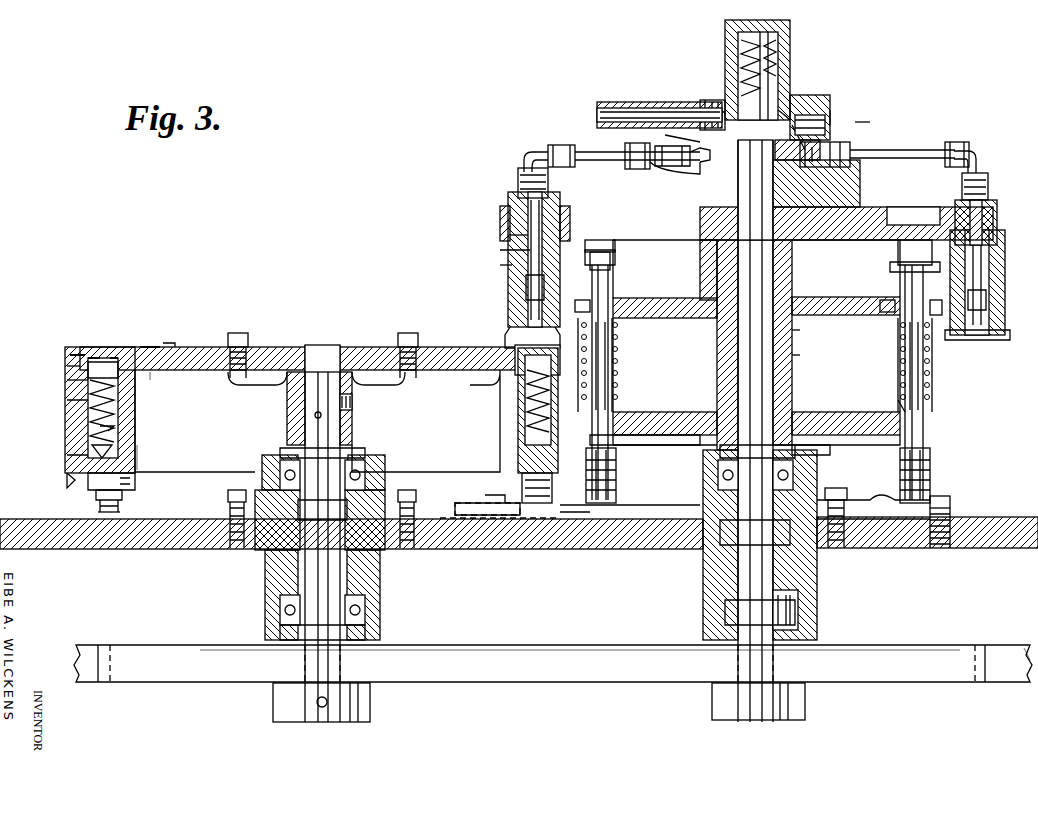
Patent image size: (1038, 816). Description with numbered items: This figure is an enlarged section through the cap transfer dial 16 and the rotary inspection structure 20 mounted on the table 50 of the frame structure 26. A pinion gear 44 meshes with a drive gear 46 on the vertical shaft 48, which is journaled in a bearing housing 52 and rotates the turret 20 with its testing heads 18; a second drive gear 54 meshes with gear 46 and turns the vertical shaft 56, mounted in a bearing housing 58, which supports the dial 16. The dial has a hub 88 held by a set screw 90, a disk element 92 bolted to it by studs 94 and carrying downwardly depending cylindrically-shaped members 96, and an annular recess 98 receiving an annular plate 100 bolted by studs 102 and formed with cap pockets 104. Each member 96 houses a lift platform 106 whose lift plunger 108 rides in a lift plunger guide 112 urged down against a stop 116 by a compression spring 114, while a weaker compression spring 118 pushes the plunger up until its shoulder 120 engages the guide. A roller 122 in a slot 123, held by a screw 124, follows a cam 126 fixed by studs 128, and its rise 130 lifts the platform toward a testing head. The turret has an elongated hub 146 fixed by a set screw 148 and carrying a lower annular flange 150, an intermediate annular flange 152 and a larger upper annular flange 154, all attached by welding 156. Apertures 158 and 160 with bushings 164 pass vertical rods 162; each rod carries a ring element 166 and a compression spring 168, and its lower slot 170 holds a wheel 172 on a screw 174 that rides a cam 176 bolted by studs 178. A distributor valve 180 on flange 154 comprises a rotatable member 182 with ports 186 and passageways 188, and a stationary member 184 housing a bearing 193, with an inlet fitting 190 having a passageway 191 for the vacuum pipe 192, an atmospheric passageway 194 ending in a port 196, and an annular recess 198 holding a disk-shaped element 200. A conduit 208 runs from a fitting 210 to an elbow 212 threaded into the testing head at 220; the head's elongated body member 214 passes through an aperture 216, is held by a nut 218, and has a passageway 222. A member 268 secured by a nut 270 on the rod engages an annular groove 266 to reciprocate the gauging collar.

The cap supporting and transfer dial 16 is at (236, 342).
The testing head 18 is at (503, 283).
The rotary inspection structure 20 is at (500, 221).
The frame structure 26 is at (982, 514).
The pinion gear 44 is at (1010, 645).
The drive gear 46 is at (897, 645).
The vertical shaft 48 is at (735, 580).
The table 50 is at (30, 519).
The bearing housing 52 is at (822, 450).
The drive gear 54 is at (442, 645).
The vertical shaft 56 is at (322, 345).
The bearing housing 58 is at (262, 566).
The hub 88 is at (353, 420).
The set screw 90 is at (353, 400).
The disk element 92 is at (193, 372).
The studs 94 is at (245, 333).
The cylindrically-shaped members 96 is at (140, 448).
The annular recess 98 is at (145, 347).
The annular plate 100 is at (152, 346).
The studs 102 is at (168, 343).
The pockets 104 is at (110, 356).
The lift platform 106 is at (92, 358).
The lift plunger 108 is at (75, 358).
The lift plunger guide 112 is at (66, 402).
The compression spring 114 is at (66, 368).
The stop 116 is at (70, 483).
The compression spring 118 is at (98, 427).
The shoulder 120 is at (66, 382).
The roller 122 is at (124, 496).
The slot 123 is at (110, 512).
The screw 124 is at (128, 482).
The cam 126 is at (458, 503).
The studs 128 is at (468, 503).
The rise 130 is at (505, 498).
The elongated hub 146 is at (795, 335).
The set screw 148 is at (795, 358).
The lower annular flange 150 is at (830, 412).
The intermediate annular flange 152 is at (825, 298).
The upper annular flange 154 is at (810, 245).
The welding 156 is at (714, 255).
The apertures 158 is at (898, 408).
The apertures 160 is at (758, 370).
The vertical rod 162 is at (612, 355).
The bushings 164 is at (612, 330).
The ring element 166 is at (600, 400).
The compression spring 168 is at (605, 370).
The slot 170 is at (612, 452).
The wheel 172 is at (612, 500).
The screw 174 is at (617, 468).
The cam 176 is at (873, 498).
The studs 178 is at (945, 549).
The distributor valve 180 is at (845, 122).
The rotatable member 182 is at (862, 190).
The stationary member 184 is at (820, 142).
The ports 186 is at (810, 140).
The passageway 188 is at (655, 150).
The inlet fitting 190 is at (700, 100).
The passageway 191 is at (710, 100).
The pipe 192 is at (608, 102).
The bearing 193 is at (785, 112).
The passageway 194 is at (810, 100).
The port 196 is at (832, 112).
The annular recess 198 is at (712, 140).
The disk-shaped element 200 is at (800, 128).
The conduit 208 is at (560, 145).
The fitting 210 is at (505, 212).
The elbow 212 is at (524, 164).
The elongated body member 214 is at (510, 237).
The aperture 216 is at (998, 215).
The nut 218 is at (990, 186).
The threaded connection 220 is at (518, 184).
The passageway 222 is at (510, 251).
The annular groove 266 is at (502, 266).
The member 268 is at (612, 262).
The nut 270 is at (615, 244).